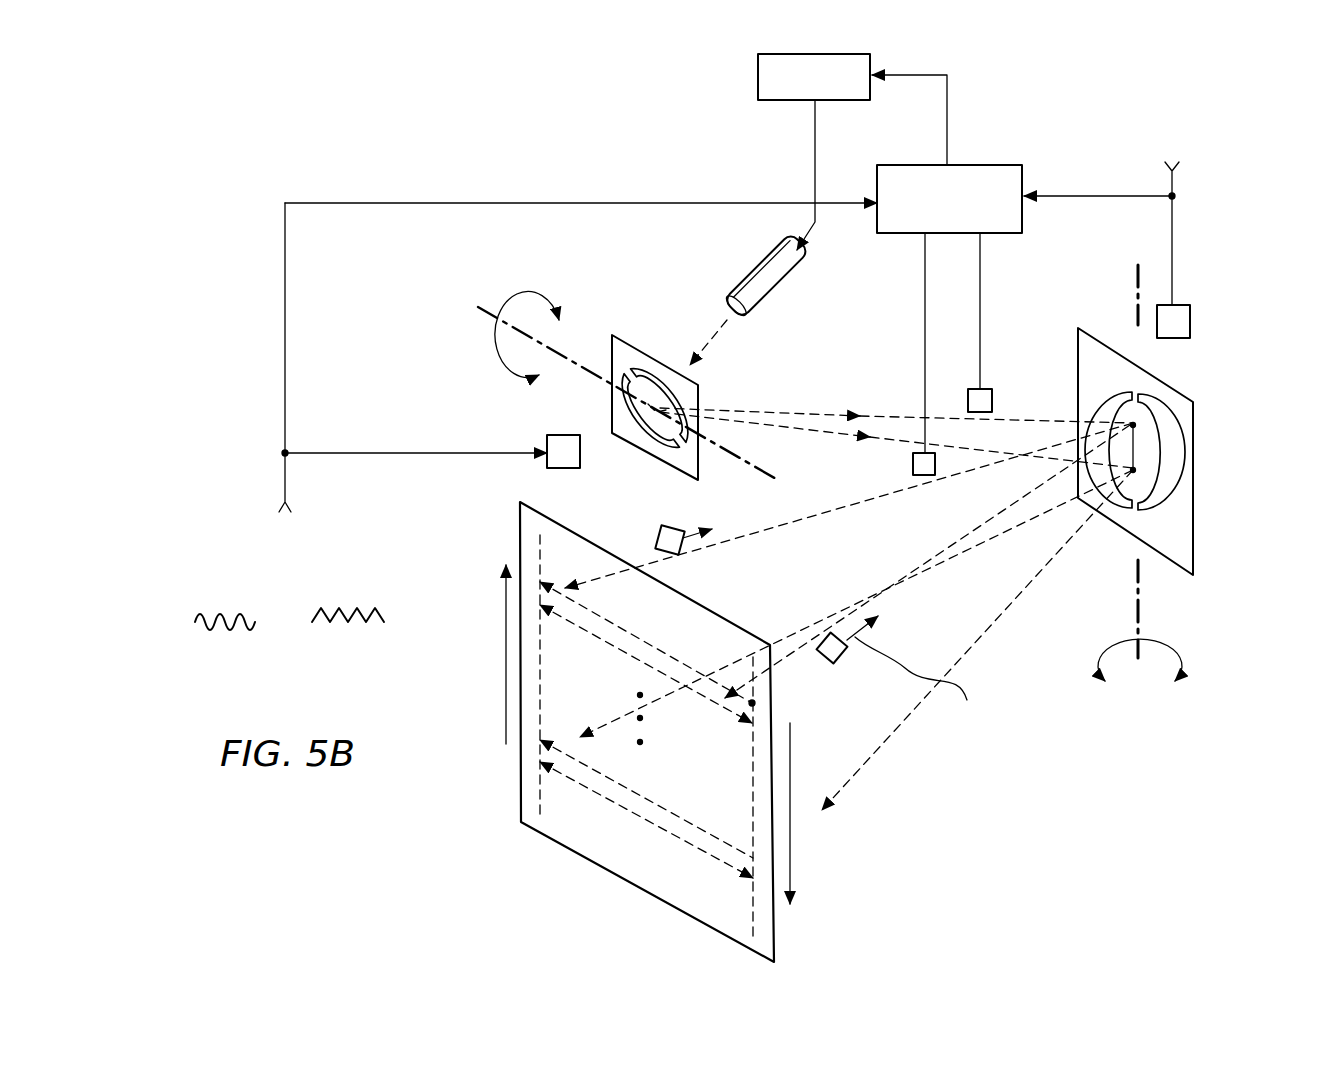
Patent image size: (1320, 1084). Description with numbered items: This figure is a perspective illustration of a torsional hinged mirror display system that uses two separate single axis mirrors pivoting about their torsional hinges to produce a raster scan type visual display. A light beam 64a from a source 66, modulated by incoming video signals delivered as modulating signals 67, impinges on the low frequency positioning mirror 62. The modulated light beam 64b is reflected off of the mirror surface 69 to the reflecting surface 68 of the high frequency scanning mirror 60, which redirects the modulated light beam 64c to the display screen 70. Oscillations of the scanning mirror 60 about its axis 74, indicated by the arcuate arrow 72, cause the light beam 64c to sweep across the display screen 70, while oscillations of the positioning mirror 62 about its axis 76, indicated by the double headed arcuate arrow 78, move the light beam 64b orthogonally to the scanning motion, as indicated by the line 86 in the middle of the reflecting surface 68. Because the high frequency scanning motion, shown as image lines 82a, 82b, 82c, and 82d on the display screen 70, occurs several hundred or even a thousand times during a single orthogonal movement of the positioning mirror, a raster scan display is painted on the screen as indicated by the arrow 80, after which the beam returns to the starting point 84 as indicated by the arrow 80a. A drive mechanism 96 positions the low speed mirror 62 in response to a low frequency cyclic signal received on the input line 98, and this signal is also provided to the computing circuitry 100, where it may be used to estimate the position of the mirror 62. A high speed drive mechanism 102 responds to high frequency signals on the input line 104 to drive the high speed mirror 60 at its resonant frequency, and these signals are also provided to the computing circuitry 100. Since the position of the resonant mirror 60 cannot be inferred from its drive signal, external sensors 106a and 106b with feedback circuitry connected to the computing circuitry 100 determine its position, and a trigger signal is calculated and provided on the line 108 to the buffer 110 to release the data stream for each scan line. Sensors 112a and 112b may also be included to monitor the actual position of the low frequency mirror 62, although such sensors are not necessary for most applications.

The high frequency scanning single axis torsional hinged mirror 60 is at (1215, 452).
The low frequency positioning single axis torsional hinged mirror 62 is at (715, 392).
The light beam 64a is at (708, 334).
The modulated light beam 64b is at (828, 414).
The modulated light beam 64c is at (838, 512).
The source 66 is at (750, 277).
The modulating signals line 67 is at (817, 148).
The reflecting surface 68 is at (1148, 472).
The mirror surface 69 is at (642, 397).
The display screen 70 is at (662, 884).
The arcuate arrow 72 is at (1184, 655).
The axis 74 is at (1144, 598).
The axis 76 is at (745, 467).
The double headed arcuate arrow 78 is at (541, 295).
The arrow 80 is at (794, 866).
The arrow 80a is at (504, 660).
The image line 82a is at (626, 621).
The image line 82b is at (610, 646).
The image line 82c is at (678, 817).
The image line 82d is at (601, 802).
The starting point 84 is at (759, 703).
The line 86 is at (1150, 449).
The drive mechanism 96 is at (565, 435).
The input line 98 is at (283, 475).
The computing circuitry 100 is at (994, 165).
The high speed drive mechanism 102 is at (1190, 322).
The input line 104 is at (1088, 198).
The sensor 106a is at (838, 660).
The sensor 106b is at (664, 530).
The line 108 is at (951, 91).
The buffer 110 is at (758, 73).
The sensor 112a is at (993, 395).
The sensor 112b is at (912, 465).